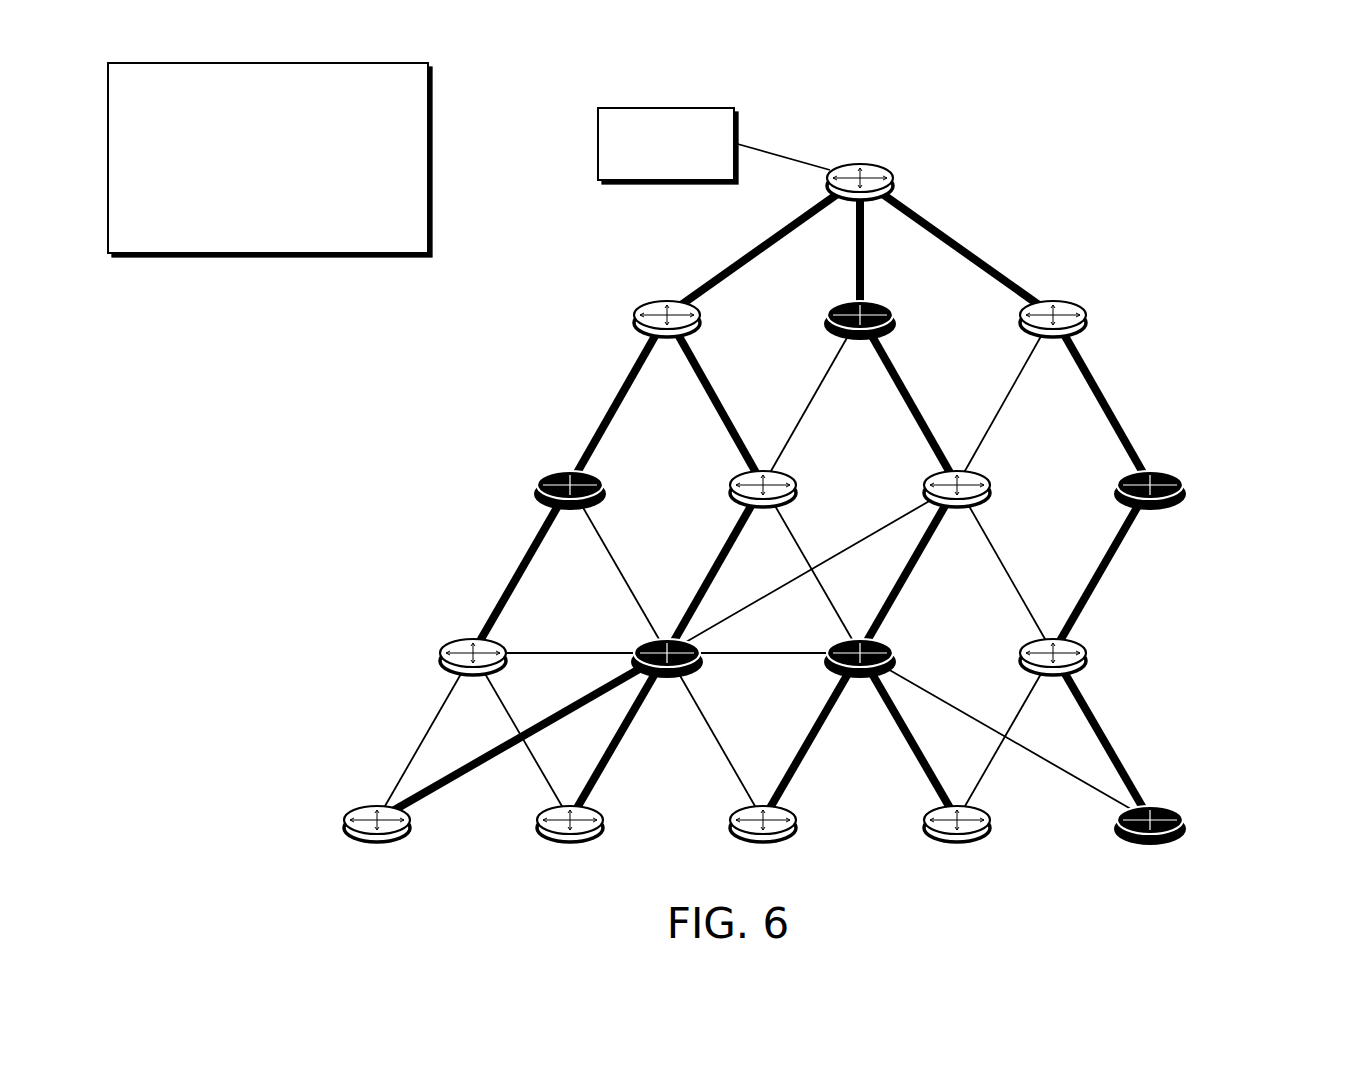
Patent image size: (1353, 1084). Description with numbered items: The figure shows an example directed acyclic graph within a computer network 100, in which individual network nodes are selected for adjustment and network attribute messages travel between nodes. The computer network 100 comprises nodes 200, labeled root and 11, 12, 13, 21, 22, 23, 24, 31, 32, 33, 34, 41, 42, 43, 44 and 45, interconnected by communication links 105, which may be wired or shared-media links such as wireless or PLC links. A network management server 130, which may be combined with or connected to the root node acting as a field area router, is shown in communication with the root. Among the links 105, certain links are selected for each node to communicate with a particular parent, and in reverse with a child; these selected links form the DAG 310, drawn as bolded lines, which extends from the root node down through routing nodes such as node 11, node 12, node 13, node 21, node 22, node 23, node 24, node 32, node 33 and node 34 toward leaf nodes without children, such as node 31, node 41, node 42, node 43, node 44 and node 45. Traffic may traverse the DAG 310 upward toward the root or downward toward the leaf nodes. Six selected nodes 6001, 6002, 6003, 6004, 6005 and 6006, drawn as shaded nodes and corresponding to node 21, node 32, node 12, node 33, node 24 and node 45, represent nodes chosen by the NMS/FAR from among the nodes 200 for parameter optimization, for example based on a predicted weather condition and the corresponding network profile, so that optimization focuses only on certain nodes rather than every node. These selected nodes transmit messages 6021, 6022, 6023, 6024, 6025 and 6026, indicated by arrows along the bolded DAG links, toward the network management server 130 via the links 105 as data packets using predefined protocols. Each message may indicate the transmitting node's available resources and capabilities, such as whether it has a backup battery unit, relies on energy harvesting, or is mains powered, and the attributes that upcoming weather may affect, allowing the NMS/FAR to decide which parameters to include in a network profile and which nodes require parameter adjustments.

The computer network 100 is at (1252, 118).
The communication links 105 is at (143, 91).
The network management server 130 is at (648, 169).
The nodes 200 is at (705, 501).
The directed acyclic graph 310 is at (143, 207).
The selected node 6001 is at (539, 510).
The selected node 6002 is at (701, 674).
The selected node 6003 is at (894, 342).
The selected node 6004 is at (895, 678).
The selected node 6005 is at (1185, 510).
The selected node 6006 is at (1184, 845).
The message 6021 is at (592, 381).
The message 6022 is at (698, 509).
The message 6023 is at (883, 224).
The message 6024 is at (933, 568).
The message 6025 is at (1120, 385).
The message 6026 is at (1115, 720).
The network node 11 is at (667, 342).
The network node 12 is at (860, 342).
The network node 13 is at (1053, 342).
The network node 21 is at (570, 510).
The network node 22 is at (763, 510).
The network node 23 is at (957, 510).
The network node 24 is at (1150, 510).
The network node 31 is at (473, 678).
The network node 32 is at (667, 678).
The network node 33 is at (860, 678).
The network node 34 is at (1053, 678).
The network node 41 is at (377, 845).
The network node 42 is at (570, 845).
The network node 43 is at (763, 845).
The network node 44 is at (957, 845).
The network node 45 is at (1150, 845).